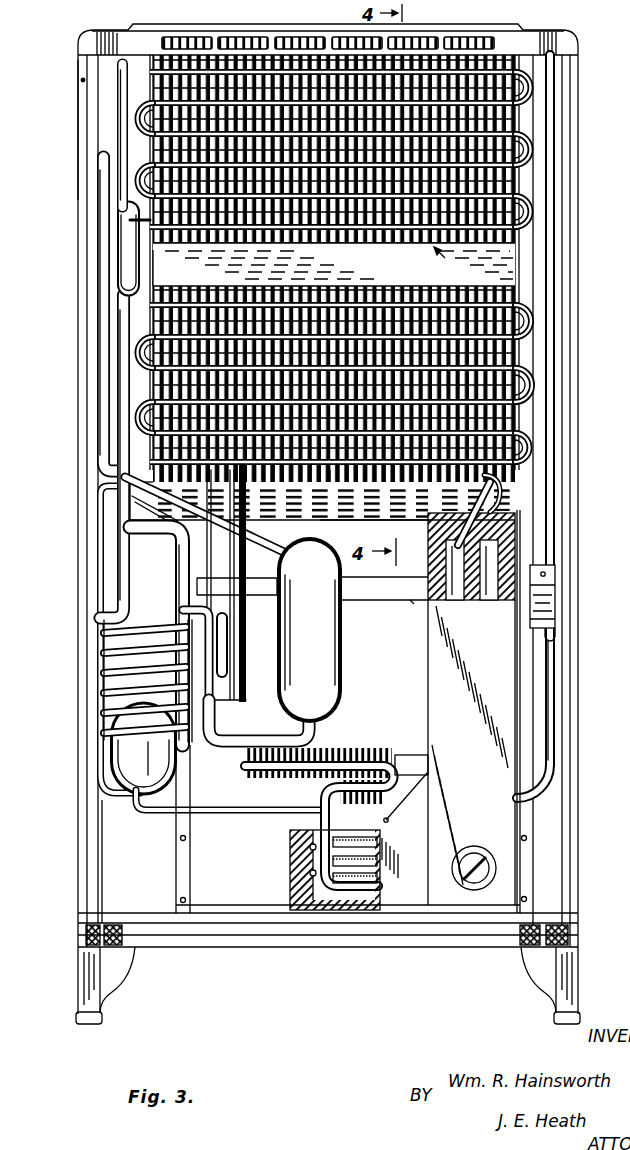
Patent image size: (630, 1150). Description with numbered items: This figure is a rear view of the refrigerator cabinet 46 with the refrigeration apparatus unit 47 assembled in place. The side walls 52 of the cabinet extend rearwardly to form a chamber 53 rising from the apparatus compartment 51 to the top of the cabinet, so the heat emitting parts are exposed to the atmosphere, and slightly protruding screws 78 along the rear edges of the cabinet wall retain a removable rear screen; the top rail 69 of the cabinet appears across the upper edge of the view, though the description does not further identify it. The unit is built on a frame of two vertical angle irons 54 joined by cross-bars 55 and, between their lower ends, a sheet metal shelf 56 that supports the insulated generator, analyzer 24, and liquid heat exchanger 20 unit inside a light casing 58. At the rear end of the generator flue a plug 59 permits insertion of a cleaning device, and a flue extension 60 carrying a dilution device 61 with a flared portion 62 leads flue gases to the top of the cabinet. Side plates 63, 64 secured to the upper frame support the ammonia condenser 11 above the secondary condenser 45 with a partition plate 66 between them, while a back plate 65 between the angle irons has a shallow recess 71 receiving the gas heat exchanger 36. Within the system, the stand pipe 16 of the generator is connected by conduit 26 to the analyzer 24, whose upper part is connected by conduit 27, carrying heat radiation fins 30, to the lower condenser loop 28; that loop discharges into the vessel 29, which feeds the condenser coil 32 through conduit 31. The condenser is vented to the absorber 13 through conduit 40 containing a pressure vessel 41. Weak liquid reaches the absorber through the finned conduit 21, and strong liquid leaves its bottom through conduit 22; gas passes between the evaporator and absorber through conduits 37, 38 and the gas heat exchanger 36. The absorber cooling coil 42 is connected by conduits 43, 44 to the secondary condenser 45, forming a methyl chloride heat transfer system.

The condenser 11 is at (442, 276).
The absorber 13 is at (137, 786).
The stand pipe 16 is at (496, 493).
The liquid heat exchanger 20 is at (292, 884).
The conduit 21 is at (389, 761).
The conduit 22 is at (226, 810).
The analyzer 24 is at (448, 558).
The conduit 26 is at (502, 500).
The conduit 27 is at (470, 500).
The lower condenser loop 28 is at (540, 212).
The vessel 29 is at (124, 254).
The heat radiation fins 30 is at (330, 482).
The conduit 31 is at (123, 93).
The condenser coil 32 is at (540, 84).
The gas heat exchanger 36 is at (244, 560).
The conduit 37 is at (238, 719).
The conduit 38 is at (228, 652).
The conduit 40 is at (99, 188).
The pressure vessel 41 is at (322, 631).
The absorber cooling coil 42 is at (105, 673).
The conduit 43 is at (95, 530).
The conduit 44 is at (130, 540).
The condenser 45 is at (540, 387).
The cabinet 46 is at (68, 896).
The refrigeration apparatus unit 47 is at (168, 839).
The apparatus compartment 51 is at (160, 912).
The side walls 52 is at (78, 845).
The chamber 53 is at (105, 571).
The vertical angle irons 54 is at (185, 563).
The cross-bars 55 is at (411, 756).
The sheet metal shelf 56 is at (243, 910).
The casing 58 is at (386, 820).
The plug 59 is at (491, 849).
The extension 60 is at (546, 713).
The dilution device 61 is at (557, 600).
The flared portion 62 is at (558, 641).
The side plate 63 is at (517, 257).
The side plate 64 is at (155, 265).
The back plate 65 is at (348, 520).
The partition plate 66 is at (490, 280).
The top rail 69 is at (90, 38).
The recess 71 is at (238, 505).
The screws 78 is at (83, 80).